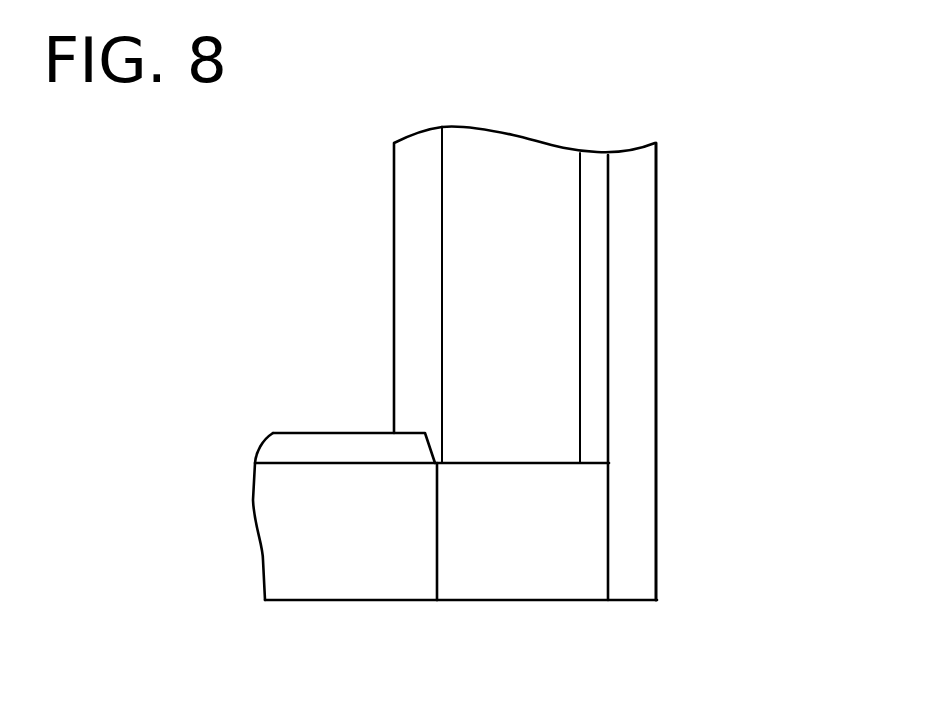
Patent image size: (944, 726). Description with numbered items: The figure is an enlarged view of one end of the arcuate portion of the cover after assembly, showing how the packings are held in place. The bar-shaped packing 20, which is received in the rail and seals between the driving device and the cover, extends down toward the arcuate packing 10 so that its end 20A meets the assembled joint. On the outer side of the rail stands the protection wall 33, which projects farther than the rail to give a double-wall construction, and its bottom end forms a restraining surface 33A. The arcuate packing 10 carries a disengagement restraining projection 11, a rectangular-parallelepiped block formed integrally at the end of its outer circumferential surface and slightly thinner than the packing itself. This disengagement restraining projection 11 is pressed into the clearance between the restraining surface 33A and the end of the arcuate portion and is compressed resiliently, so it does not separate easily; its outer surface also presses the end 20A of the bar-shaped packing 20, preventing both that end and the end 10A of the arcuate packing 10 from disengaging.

The bar-shaped packing 20 is at (567, 213).
The end of the bar-shaped packing 20A is at (562, 305).
The protection wall 33 is at (632, 253).
The restraining surface 33A is at (610, 517).
The arcuate packing 10 is at (316, 527).
The end of the arcuate packing 10A is at (363, 573).
The disengagement restraining projection 11 is at (527, 573).